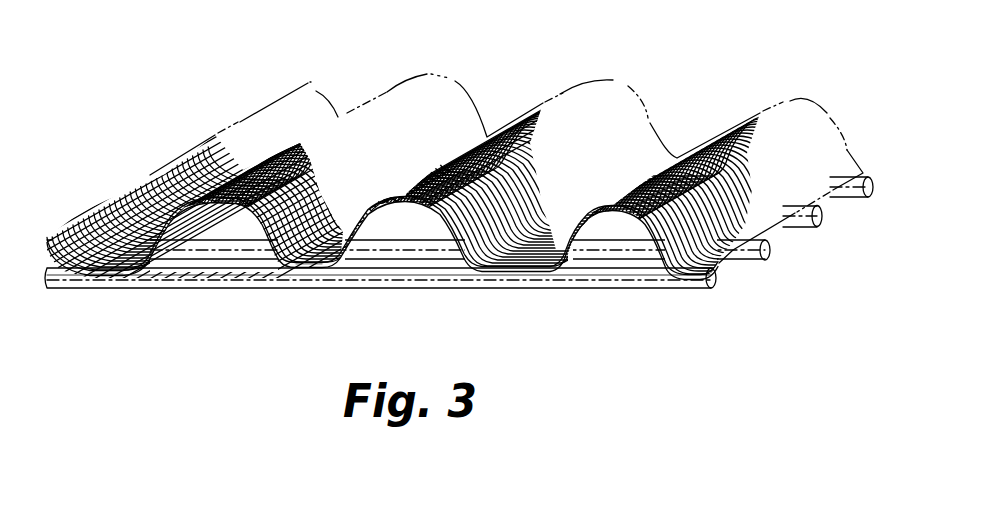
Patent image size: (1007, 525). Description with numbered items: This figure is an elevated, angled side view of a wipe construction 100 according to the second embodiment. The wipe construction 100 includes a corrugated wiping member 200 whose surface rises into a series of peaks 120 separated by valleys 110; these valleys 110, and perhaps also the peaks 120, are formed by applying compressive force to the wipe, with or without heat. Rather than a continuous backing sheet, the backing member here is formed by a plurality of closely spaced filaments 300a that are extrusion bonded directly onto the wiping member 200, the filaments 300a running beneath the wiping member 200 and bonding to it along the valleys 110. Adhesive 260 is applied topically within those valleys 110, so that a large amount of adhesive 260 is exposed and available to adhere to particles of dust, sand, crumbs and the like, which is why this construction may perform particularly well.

The wipe construction 100 is at (745, 52).
The wiping member 200 is at (622, 82).
The peaks 120 is at (238, 199).
The valleys 110 is at (497, 267).
The adhesive 260 is at (258, 262).
The closely spaced filaments 300a is at (822, 227).